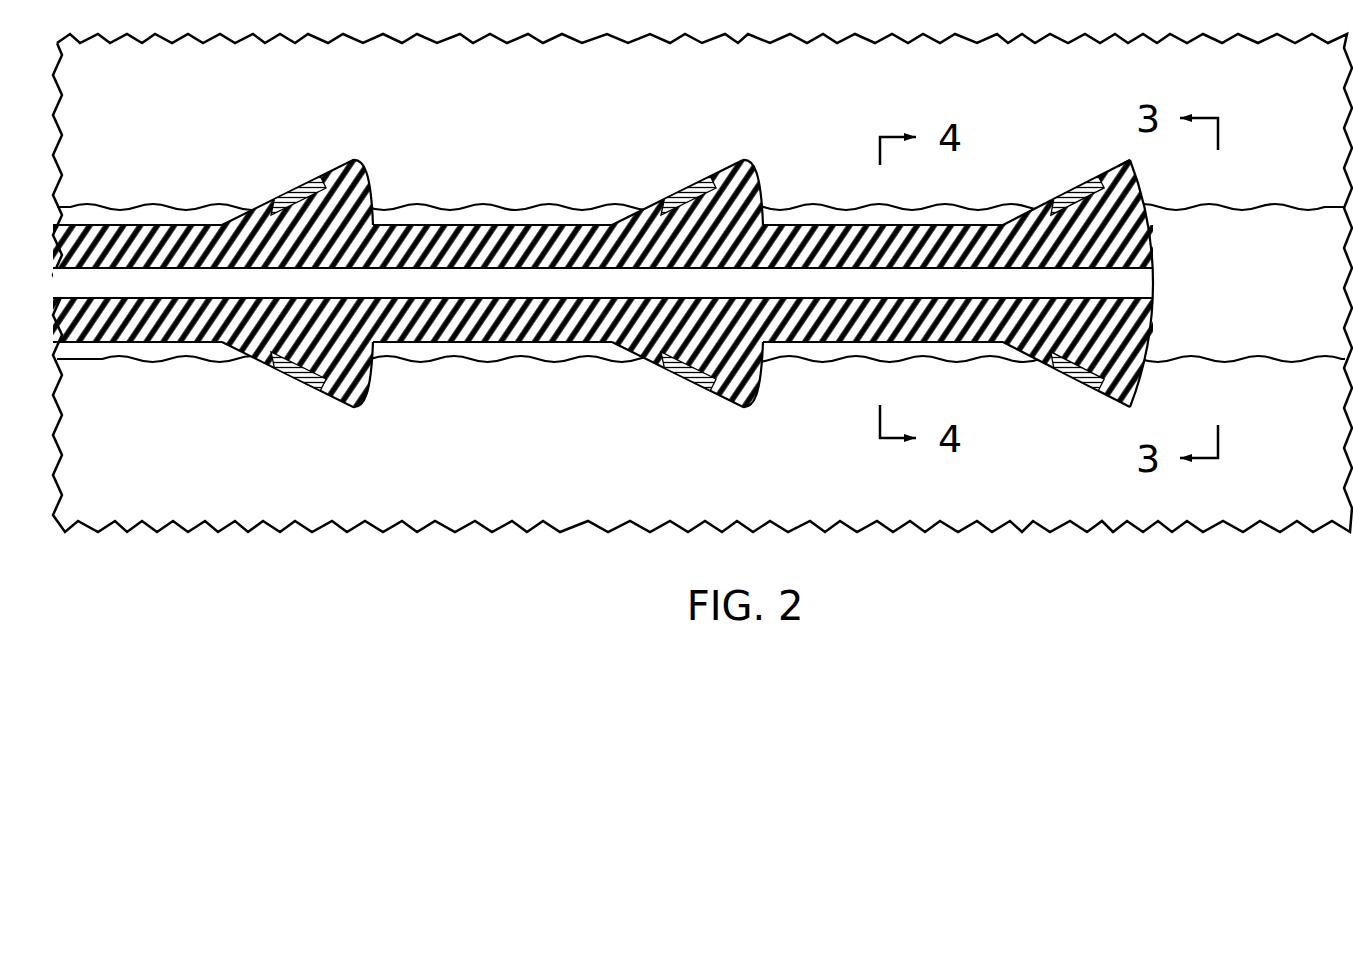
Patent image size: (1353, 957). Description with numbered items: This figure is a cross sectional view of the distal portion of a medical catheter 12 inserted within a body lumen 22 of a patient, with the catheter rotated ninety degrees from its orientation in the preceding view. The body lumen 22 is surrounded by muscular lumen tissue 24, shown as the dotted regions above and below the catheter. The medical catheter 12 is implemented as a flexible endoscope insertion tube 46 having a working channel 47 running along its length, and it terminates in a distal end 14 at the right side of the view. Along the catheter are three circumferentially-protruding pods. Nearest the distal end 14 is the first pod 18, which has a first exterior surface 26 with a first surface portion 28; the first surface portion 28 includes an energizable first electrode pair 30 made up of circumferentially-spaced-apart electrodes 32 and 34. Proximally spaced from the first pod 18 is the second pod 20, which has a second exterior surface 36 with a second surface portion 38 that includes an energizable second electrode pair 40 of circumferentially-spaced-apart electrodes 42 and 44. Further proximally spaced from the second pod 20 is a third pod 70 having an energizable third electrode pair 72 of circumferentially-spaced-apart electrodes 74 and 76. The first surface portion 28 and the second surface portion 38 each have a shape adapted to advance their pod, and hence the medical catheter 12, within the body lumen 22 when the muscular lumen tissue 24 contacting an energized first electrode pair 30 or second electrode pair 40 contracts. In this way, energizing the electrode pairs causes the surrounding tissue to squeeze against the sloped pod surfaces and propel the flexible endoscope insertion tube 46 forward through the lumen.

The medical catheter 12 is at (502, 224).
The distal end 14 is at (1156, 254).
The first pod 18 is at (1127, 377).
The second pod 20 is at (729, 402).
The body lumen 22 is at (565, 344).
The muscular lumen tissue 24 is at (797, 132).
The first exterior surface 26 is at (1109, 114).
The first surface portion 28 is at (1061, 165).
The first electrode pair 30 is at (1094, 214).
The electrode 32 is at (1080, 196).
The electrode 34 is at (1080, 371).
The second exterior surface 36 is at (730, 143).
The second surface portion 38 is at (656, 172).
The second electrode pair 40 is at (710, 214).
The electrode 42 is at (689, 196).
The electrode 44 is at (689, 371).
The flexible endoscope insertion tube 46 is at (499, 258).
The working channel 47 is at (475, 285).
The third pod 70 is at (342, 398).
The third electrode pair 72 is at (318, 214).
The electrode 74 is at (297, 196).
The electrode 76 is at (297, 371).